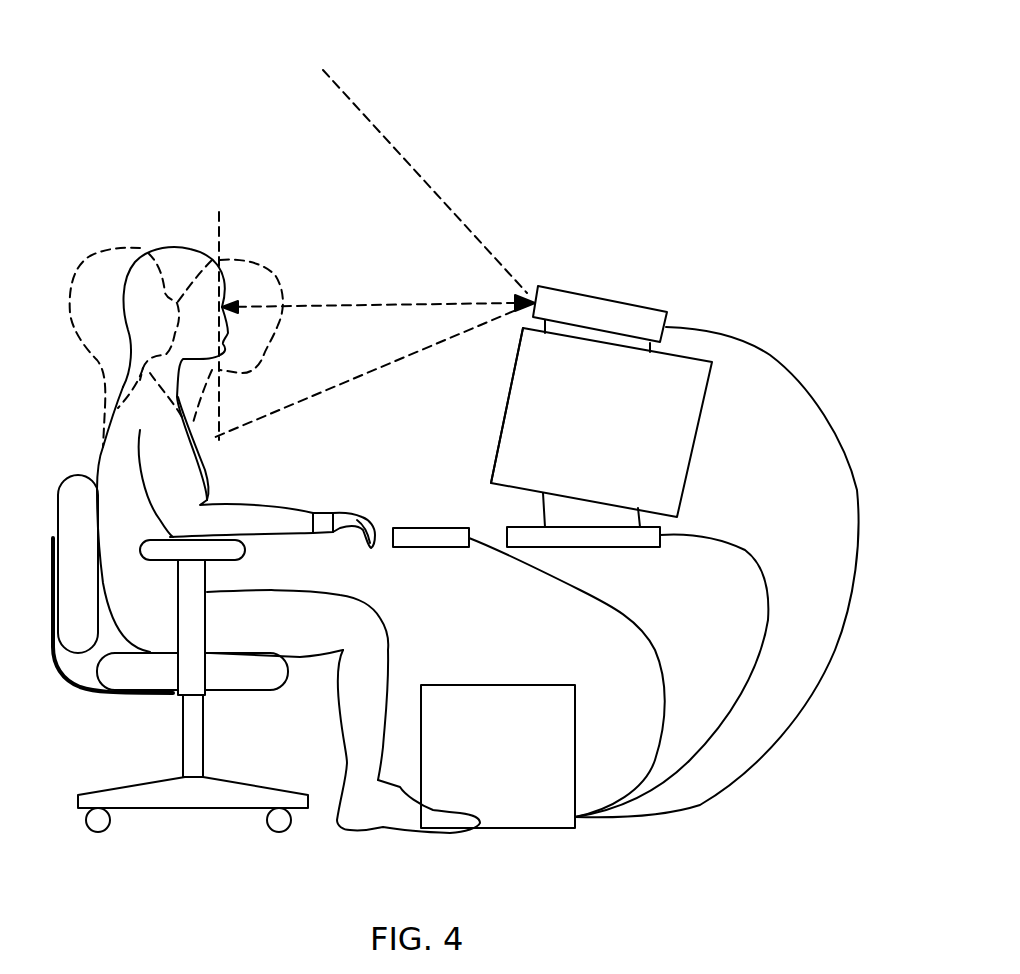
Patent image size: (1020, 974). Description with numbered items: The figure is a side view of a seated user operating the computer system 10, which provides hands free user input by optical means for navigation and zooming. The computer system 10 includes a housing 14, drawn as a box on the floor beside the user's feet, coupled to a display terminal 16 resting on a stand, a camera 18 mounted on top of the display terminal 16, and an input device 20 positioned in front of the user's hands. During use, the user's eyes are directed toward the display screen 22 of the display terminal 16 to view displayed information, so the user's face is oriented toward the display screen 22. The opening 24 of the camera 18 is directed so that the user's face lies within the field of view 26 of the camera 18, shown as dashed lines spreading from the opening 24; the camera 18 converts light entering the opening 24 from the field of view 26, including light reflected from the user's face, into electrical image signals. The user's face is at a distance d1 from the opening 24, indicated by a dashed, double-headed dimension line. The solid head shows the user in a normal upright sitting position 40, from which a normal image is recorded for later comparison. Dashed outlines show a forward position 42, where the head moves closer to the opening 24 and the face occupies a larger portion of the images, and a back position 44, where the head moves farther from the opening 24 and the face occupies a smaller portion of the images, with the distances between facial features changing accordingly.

The computer system 10 is at (518, 172).
The housing 14 is at (498, 683).
The display terminal 16 is at (697, 442).
The camera 18 is at (605, 297).
The input device 20 is at (440, 527).
The display screen 22 is at (507, 403).
The opening 24 is at (530, 297).
The field of view 26 is at (407, 157).
The normal upright sitting position 40 is at (183, 248).
The forward position 42 is at (250, 260).
The back position 44 is at (105, 248).
The distance d1 is at (368, 298).